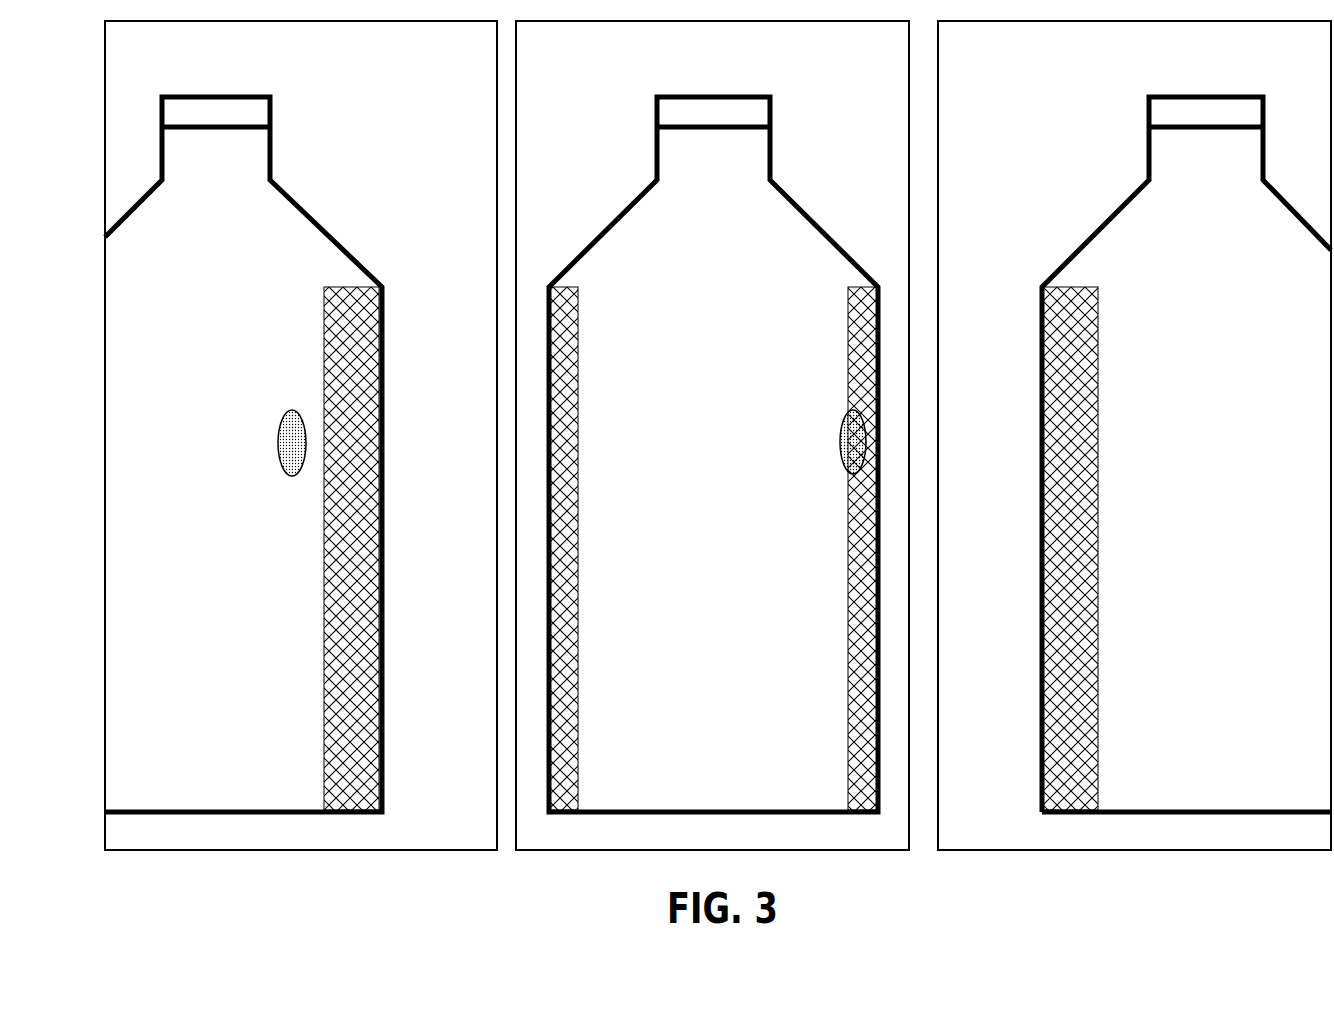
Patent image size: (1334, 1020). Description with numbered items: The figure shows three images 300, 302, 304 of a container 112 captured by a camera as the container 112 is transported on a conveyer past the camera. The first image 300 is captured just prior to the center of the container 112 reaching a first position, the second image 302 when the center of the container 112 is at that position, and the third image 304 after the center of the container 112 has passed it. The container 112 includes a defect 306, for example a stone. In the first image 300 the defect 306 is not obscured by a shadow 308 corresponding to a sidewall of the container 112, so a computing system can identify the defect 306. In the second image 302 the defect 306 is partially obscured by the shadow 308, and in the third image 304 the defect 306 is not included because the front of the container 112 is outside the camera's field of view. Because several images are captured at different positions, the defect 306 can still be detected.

The first image 300 is at (433, 93).
The second image 302 is at (857, 93).
The third image 304 is at (1072, 93).
The container 112 is at (347, 252).
The defect 306 is at (283, 415).
The shadow 308 is at (324, 306).